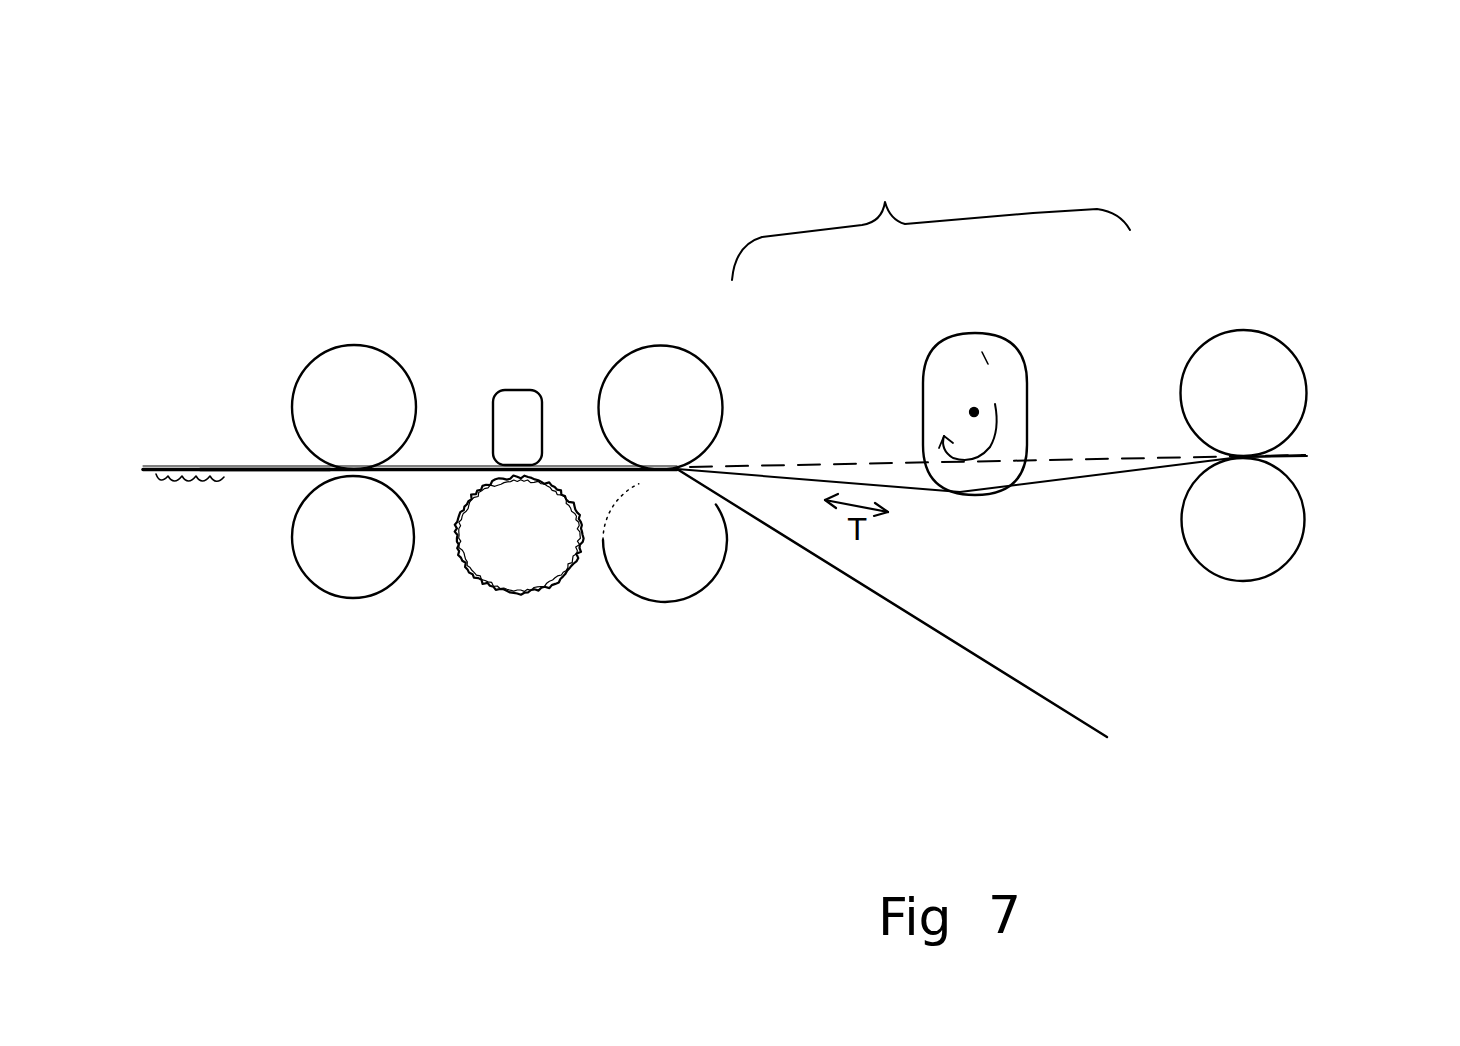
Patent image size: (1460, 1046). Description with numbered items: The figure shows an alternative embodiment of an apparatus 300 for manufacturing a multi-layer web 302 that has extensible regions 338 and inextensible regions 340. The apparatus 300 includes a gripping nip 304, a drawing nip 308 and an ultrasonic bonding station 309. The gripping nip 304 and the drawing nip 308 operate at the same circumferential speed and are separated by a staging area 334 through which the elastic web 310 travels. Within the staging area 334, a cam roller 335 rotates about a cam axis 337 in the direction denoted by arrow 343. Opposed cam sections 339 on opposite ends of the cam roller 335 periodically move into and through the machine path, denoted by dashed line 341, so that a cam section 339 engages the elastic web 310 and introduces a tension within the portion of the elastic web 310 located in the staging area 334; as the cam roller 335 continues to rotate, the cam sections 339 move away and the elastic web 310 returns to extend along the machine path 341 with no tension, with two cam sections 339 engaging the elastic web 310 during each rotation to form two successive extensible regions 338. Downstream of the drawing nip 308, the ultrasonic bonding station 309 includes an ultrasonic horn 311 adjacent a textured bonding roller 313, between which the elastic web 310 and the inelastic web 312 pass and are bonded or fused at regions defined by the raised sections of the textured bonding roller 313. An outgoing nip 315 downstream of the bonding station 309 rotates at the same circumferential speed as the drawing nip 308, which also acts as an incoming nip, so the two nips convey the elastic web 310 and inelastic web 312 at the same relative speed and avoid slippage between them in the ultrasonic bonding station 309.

The apparatus 300 is at (455, 145).
The multi-layer web 302 is at (165, 460).
The gripping nip 304 is at (1232, 295).
The drawing nip 308 is at (650, 312).
The ultrasonic bonding station 309 is at (532, 330).
The elastic web 310 is at (1298, 459).
The ultrasonic horn 311 is at (498, 405).
The inelastic web 312 is at (850, 577).
The textured bonding roller 313 is at (520, 560).
The outgoing nip 315 is at (330, 335).
The staging area 334 is at (931, 213).
The cam roller 335 is at (923, 395).
The cam axis 337 is at (975, 405).
The extensible regions 338 is at (168, 486).
The cam sections 339 is at (970, 348).
The inextensible regions 340 is at (272, 478).
The machine path 341 is at (765, 465).
The arrow 343 is at (998, 428).